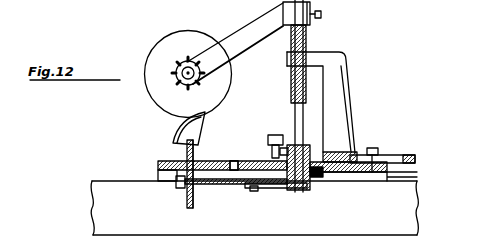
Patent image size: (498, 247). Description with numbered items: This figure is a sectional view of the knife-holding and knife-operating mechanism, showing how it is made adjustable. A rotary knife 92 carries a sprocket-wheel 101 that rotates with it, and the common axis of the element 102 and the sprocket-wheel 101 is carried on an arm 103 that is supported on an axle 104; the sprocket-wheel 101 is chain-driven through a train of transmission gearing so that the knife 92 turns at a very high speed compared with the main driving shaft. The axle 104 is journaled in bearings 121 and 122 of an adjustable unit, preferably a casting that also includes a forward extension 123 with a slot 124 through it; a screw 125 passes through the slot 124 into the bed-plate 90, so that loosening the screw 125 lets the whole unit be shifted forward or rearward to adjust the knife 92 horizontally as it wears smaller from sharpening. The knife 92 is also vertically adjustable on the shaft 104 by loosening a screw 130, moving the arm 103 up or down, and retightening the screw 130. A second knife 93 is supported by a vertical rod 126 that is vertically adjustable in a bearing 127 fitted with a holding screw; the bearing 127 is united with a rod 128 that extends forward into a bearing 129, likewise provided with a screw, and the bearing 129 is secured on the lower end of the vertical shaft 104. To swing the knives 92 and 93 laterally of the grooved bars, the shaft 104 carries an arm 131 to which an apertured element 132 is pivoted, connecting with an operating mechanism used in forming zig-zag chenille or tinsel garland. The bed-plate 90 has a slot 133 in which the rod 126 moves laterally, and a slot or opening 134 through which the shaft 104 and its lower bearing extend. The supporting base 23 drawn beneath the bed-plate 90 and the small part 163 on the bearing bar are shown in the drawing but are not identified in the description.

The base 23 is at (416, 208).
The bed-plate 90 is at (388, 173).
The knife 92 is at (186, 33).
The knife 93 is at (181, 132).
The sprocket-wheel 101 is at (176, 69).
The rotating element 102 is at (181, 77).
The arm 103 is at (262, 19).
The axle 104 is at (306, 42).
The bearing 121 is at (290, 57).
The bearing 122 is at (280, 167).
The forward extension 123 is at (412, 157).
The slot 124 is at (397, 149).
The screw 125 is at (374, 148).
The vertical rod 126 is at (186, 153).
The bearing 127 is at (183, 188).
The rod 128 is at (228, 184).
The bearing 129 is at (262, 188).
The screw 130 is at (322, 14).
The arm 131 is at (281, 135).
The apertured element 132 is at (270, 138).
The slot 133 is at (195, 164).
The slot or opening 134 is at (323, 174).
The segment 163 is at (235, 160).